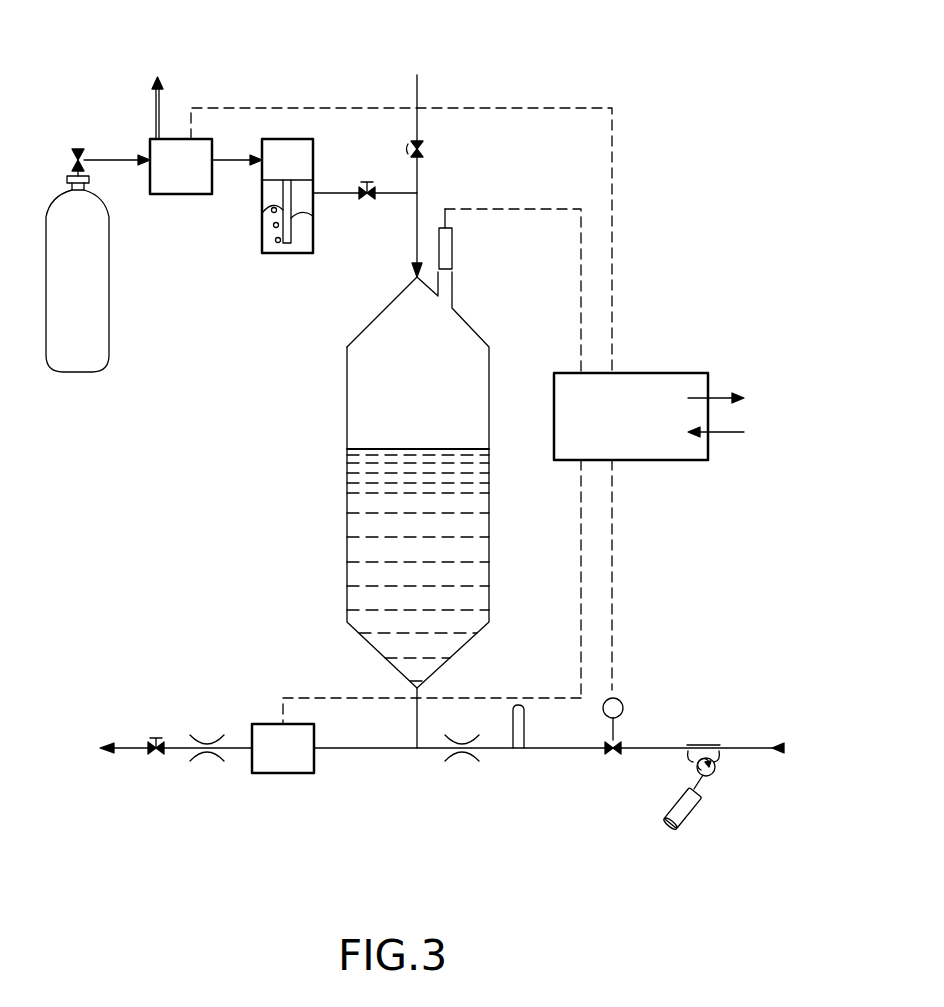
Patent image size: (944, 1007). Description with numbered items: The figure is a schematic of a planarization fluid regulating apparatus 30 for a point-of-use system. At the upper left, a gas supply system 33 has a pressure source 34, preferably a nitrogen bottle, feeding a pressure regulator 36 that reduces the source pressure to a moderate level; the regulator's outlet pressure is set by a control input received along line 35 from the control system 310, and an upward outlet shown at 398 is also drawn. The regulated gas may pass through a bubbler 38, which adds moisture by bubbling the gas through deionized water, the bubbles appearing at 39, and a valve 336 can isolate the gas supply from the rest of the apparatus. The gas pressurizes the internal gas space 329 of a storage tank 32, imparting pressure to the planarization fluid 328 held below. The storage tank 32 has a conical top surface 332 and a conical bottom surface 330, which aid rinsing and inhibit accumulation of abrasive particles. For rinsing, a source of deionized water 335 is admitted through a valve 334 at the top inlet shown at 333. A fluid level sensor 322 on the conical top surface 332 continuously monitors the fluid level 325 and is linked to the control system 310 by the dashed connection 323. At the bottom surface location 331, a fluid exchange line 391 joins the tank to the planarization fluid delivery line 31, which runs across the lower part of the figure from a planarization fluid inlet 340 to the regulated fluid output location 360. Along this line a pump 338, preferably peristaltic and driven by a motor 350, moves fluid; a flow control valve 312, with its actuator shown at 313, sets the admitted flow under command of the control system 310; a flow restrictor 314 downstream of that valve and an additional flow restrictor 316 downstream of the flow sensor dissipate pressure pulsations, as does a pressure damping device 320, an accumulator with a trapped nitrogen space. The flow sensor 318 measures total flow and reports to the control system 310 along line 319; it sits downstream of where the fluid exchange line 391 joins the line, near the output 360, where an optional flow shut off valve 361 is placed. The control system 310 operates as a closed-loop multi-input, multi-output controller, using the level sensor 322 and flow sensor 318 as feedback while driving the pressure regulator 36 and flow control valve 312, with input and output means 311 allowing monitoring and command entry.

The planarization fluid regulating apparatus 30 is at (656, 68).
The planarization fluid delivery line 31 is at (812, 822).
The storage tank 32 is at (411, 472).
The gas supply system 33 is at (309, 376).
The pressure source 34 is at (77, 260).
The line 35 is at (212, 108).
The pressure regulator 36 is at (181, 166).
The bubbler 38 is at (262, 198).
The gas bubbles 39 is at (272, 253).
The control system 310 is at (631, 416).
The input and output means 311 is at (752, 382).
The flow control valve 312 is at (617, 728).
The pressure gauge 313 is at (616, 668).
The flow restrictor 314 is at (445, 755).
The additional flow restrictor 316 is at (187, 755).
The flow sensor 318 is at (283, 748).
The line 319 is at (303, 697).
The pressure damping device 320 is at (528, 718).
The fluid level sensor 322 is at (447, 247).
The sensor signal line 323 is at (497, 207).
The planarization fluid level 325 is at (362, 450).
The planarization fluid 328 is at (418, 568).
The internal gas space 329 is at (384, 378).
The conical bottom surface 330 is at (457, 653).
The bottom surface location 331 is at (420, 688).
The conical top surface 332 is at (380, 312).
The reactor inlet 333 is at (415, 276).
The valve 334 is at (425, 148).
The source of deionized water 335 is at (419, 164).
The valve 336 is at (372, 198).
The pump 338 is at (700, 745).
The planarization fluid inlet 340 is at (797, 746).
The pump motor 350 is at (694, 800).
The regulated fluid output location 360 is at (157, 748).
The flow shut off valve 361 is at (160, 740).
The fluid exchange line 391 is at (417, 722).
The vent line 398 is at (155, 110).